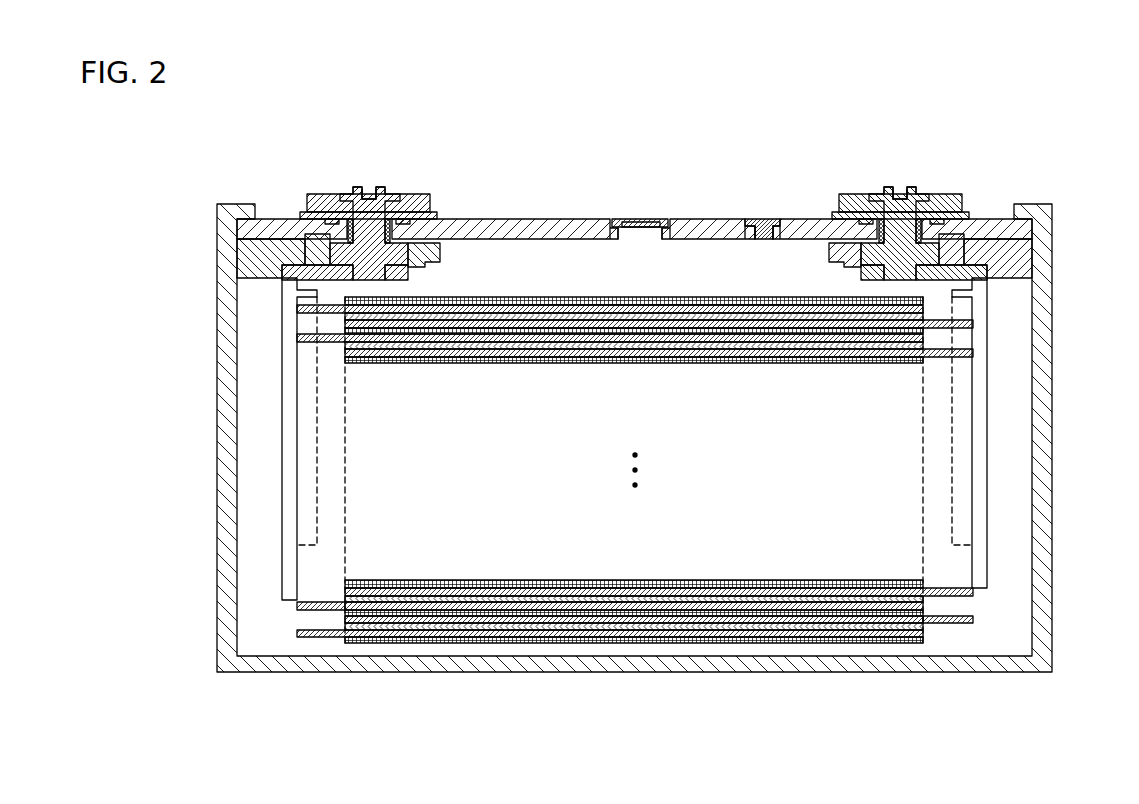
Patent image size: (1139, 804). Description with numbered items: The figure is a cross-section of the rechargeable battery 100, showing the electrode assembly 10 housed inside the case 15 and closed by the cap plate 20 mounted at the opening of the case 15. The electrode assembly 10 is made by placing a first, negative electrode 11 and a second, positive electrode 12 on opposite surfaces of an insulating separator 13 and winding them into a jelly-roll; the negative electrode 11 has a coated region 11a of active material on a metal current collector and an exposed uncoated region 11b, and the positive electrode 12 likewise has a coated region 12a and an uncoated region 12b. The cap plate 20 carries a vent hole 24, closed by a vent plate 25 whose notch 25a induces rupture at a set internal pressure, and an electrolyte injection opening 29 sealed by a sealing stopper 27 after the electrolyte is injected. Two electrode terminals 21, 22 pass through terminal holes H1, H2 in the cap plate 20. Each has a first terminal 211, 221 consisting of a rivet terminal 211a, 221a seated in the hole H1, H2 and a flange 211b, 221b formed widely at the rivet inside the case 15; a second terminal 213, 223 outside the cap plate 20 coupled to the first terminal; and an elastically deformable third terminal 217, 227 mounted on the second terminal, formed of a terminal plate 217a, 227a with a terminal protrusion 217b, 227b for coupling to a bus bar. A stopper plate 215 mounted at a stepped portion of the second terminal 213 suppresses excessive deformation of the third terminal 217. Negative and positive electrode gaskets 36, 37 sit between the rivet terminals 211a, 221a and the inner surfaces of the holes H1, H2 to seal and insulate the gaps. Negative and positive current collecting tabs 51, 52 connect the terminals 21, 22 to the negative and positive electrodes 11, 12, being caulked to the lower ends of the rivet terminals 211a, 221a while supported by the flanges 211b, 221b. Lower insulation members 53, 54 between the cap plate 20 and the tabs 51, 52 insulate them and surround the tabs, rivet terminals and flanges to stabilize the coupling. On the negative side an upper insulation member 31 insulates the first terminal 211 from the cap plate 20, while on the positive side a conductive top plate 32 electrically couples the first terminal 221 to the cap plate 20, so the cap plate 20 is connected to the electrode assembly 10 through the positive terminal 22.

The rechargeable battery 100 is at (612, 104).
The electrode assembly 10 is at (637, 528).
The first electrode 11 is at (610, 681).
The coated region 11a is at (422, 611).
The uncoated region 11b is at (443, 723).
The second electrode 12 is at (661, 674).
The coated region 12a is at (846, 624).
The uncoated region 12b is at (830, 723).
The separator 13 is at (648, 644).
The case 15 is at (1053, 430).
The cap plate 20 is at (698, 219).
The electrode terminal 21 is at (634, 403).
The electrode terminal 22 is at (949, 317).
The vent hole 24 is at (630, 240).
The vent plate 25 is at (660, 219).
The notch 25a is at (632, 220).
The sealing stopper 27 is at (768, 219).
The electrolyte injection opening 29 is at (756, 214).
The upper insulation member 31 is at (325, 214).
The top plate 32 is at (836, 217).
The negative electrode gasket 36 is at (347, 233).
The positive electrode gasket 37 is at (1000, 248).
The negative electrode current collecting tab 51 is at (266, 407).
The positive electrode current collecting tab 52 is at (1003, 515).
The lower insulation member 53 is at (252, 258).
The lower insulation member 54 is at (1015, 273).
The first terminal 211 is at (385, 370).
The rivet terminal 211a is at (369, 281).
The flange 211b is at (400, 281).
The second terminal 213 is at (431, 214).
The stopper plate 215 is at (331, 194).
The third terminal 217 is at (379, 163).
The terminal plate 217a is at (381, 188).
The terminal protrusion 217b is at (357, 188).
The first terminal 221 is at (888, 357).
The rivet terminal 221a is at (900, 281).
The flange 221b is at (862, 281).
The second terminal 223 is at (960, 214).
The third terminal 227 is at (948, 163).
The terminal plate 227a is at (887, 188).
The terminal protrusion 227b is at (907, 188).
The terminal hole H1 is at (353, 150).
The terminal hole H2 is at (956, 167).